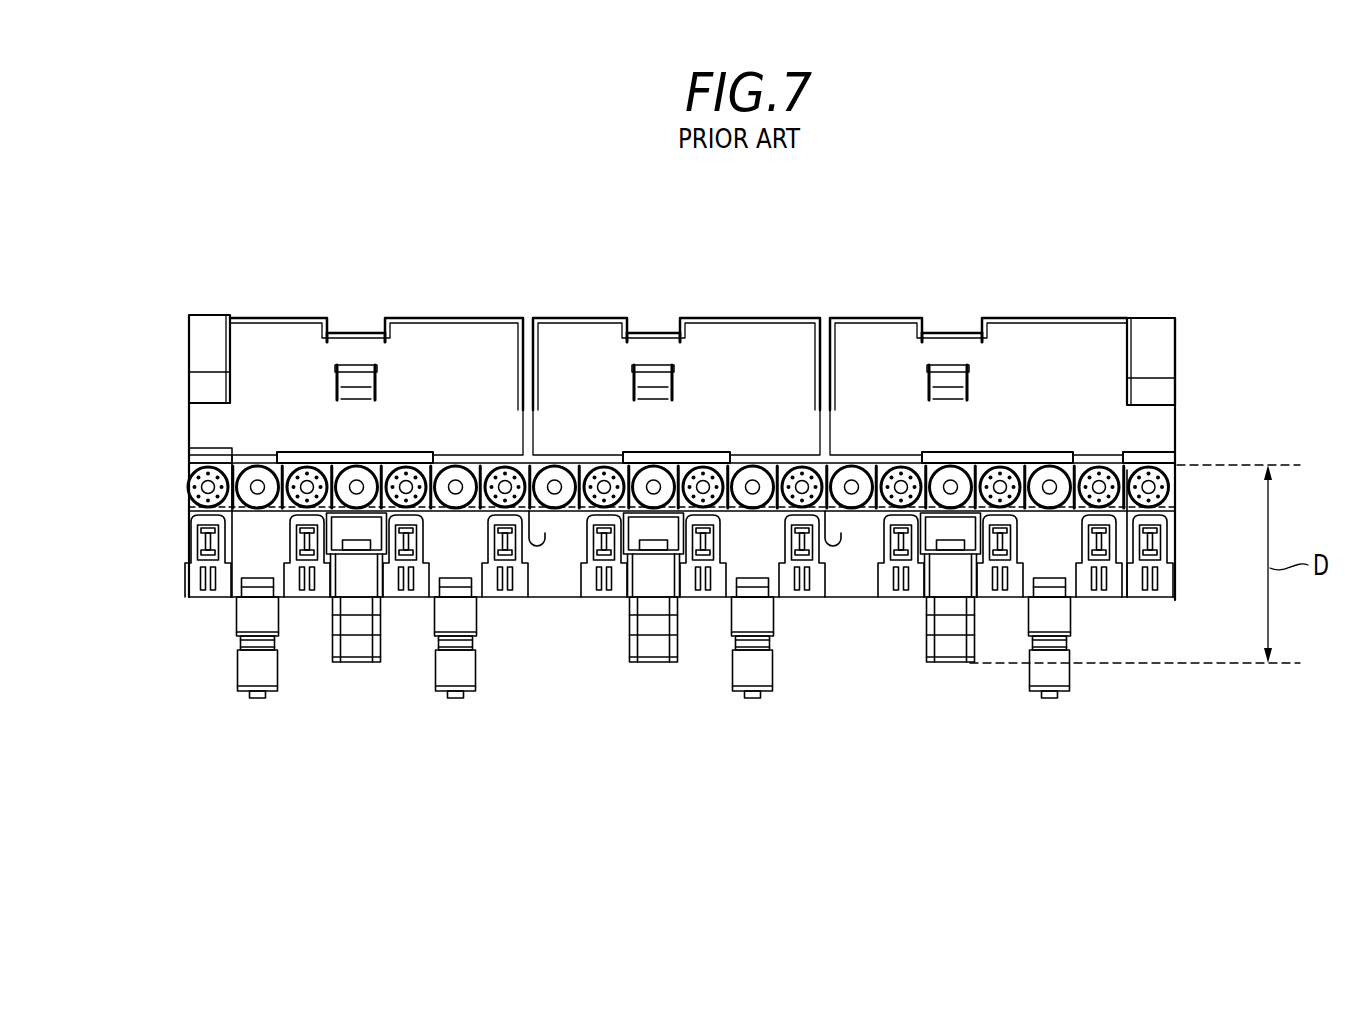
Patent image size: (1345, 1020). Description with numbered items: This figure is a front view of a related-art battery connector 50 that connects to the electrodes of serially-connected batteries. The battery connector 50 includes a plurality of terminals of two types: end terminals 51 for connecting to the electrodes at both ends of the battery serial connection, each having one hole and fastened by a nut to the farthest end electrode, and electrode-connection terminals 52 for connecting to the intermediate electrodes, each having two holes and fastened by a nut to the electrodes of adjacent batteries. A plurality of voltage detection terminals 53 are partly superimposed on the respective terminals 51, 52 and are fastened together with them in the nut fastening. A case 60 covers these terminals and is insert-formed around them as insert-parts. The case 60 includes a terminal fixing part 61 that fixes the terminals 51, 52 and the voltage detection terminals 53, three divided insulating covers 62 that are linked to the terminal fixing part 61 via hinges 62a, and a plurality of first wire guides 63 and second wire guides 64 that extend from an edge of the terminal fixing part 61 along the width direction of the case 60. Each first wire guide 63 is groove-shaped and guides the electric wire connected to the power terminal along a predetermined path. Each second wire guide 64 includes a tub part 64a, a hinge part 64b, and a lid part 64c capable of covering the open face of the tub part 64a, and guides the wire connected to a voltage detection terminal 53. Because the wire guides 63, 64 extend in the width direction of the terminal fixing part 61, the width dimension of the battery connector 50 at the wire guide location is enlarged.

The battery connector 50 is at (530, 258).
The end terminal 51 is at (205, 462).
The electrode-connection terminal 52 is at (258, 462).
The voltage detection terminal 53 is at (306, 468).
The case 60 is at (182, 343).
The terminal fixing part 61 is at (565, 513).
The insulating cover 62 is at (416, 356).
The hinge 62a is at (255, 458).
The first wire guide 63 is at (353, 650).
The second wire guide 64 is at (228, 634).
The tub part 64a is at (253, 613).
The hinge part 64b is at (238, 643).
The lid part 64c is at (254, 676).